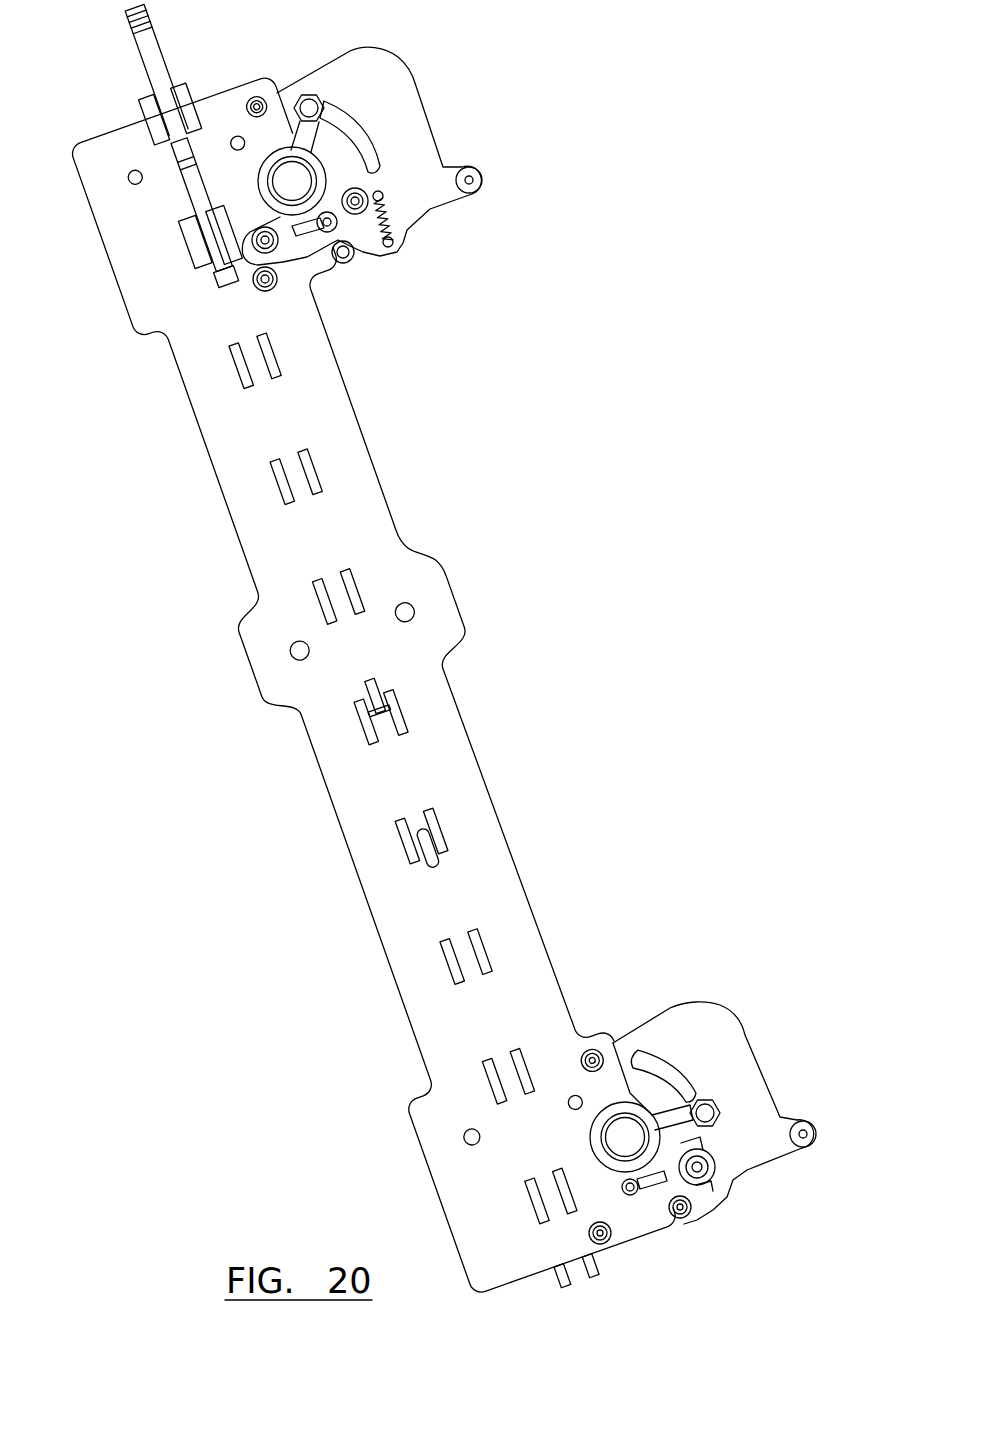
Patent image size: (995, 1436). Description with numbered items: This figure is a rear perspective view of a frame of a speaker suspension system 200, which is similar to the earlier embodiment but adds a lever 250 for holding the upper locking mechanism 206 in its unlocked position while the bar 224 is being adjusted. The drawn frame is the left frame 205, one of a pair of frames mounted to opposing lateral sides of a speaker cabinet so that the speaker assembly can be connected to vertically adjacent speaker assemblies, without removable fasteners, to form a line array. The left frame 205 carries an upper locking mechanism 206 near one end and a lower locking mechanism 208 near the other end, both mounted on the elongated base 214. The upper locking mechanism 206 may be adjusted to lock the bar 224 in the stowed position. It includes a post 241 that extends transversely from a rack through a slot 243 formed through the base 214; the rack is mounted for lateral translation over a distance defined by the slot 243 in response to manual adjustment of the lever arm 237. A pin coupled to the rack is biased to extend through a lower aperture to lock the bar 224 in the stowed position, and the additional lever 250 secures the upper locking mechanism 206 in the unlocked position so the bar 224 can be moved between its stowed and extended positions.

The suspension system 200 is at (716, 188).
The left frame 205 is at (184, 647).
The upper locking mechanism 206 is at (432, 97).
The lower locking mechanism 208 is at (787, 1089).
The base 214 is at (328, 412).
The bar 224 is at (136, 62).
The lever arm 237 is at (300, 137).
The post 241 is at (331, 230).
The slot 243 is at (306, 237).
The lever 250 is at (248, 280).